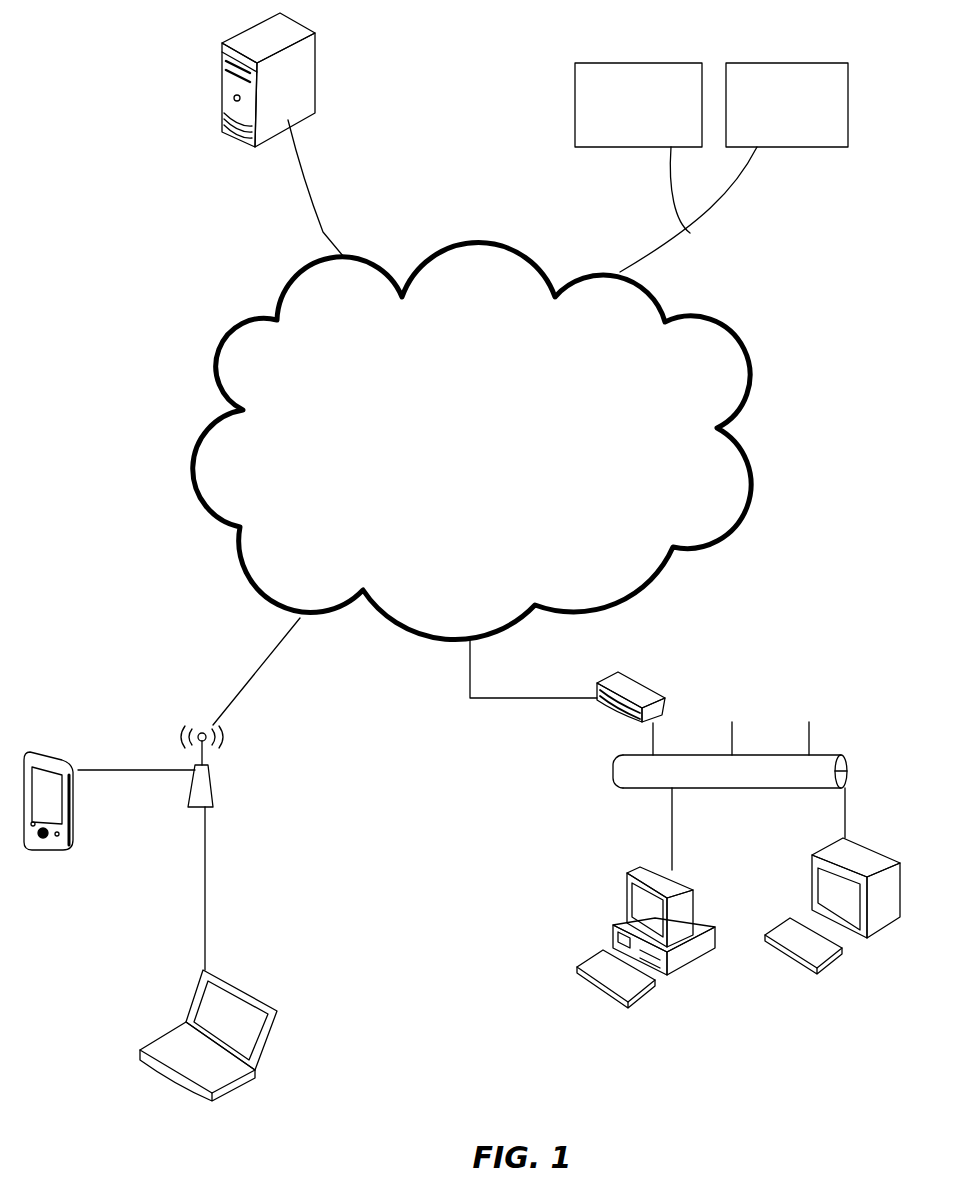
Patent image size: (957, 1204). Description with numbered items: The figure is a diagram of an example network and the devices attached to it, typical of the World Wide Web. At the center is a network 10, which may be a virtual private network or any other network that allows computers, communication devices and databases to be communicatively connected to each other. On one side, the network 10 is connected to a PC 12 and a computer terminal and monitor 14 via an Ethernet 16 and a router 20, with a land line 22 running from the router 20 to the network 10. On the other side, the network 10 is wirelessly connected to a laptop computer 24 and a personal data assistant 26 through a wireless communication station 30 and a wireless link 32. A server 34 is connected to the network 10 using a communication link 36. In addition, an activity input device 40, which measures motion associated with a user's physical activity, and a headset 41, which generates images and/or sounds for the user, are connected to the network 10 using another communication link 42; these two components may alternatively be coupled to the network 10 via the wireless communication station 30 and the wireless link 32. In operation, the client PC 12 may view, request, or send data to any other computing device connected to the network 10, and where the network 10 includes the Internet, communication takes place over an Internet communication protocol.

The network 10 is at (217, 343).
The PC 12 is at (623, 920).
The computer terminal and monitor 14 is at (882, 858).
The Ethernet 16 is at (840, 755).
The router 20 is at (665, 698).
The land line 22 is at (512, 700).
The laptop computer 24 is at (230, 1090).
The personal data assistant 26 is at (55, 758).
The wireless communication station 30 is at (213, 803).
The wireless link 32 is at (248, 683).
The server 34 is at (315, 78).
The communication link 36 is at (324, 233).
The activity input device 40 is at (790, 147).
The headset 41 is at (637, 147).
The communication link 42 is at (715, 213).